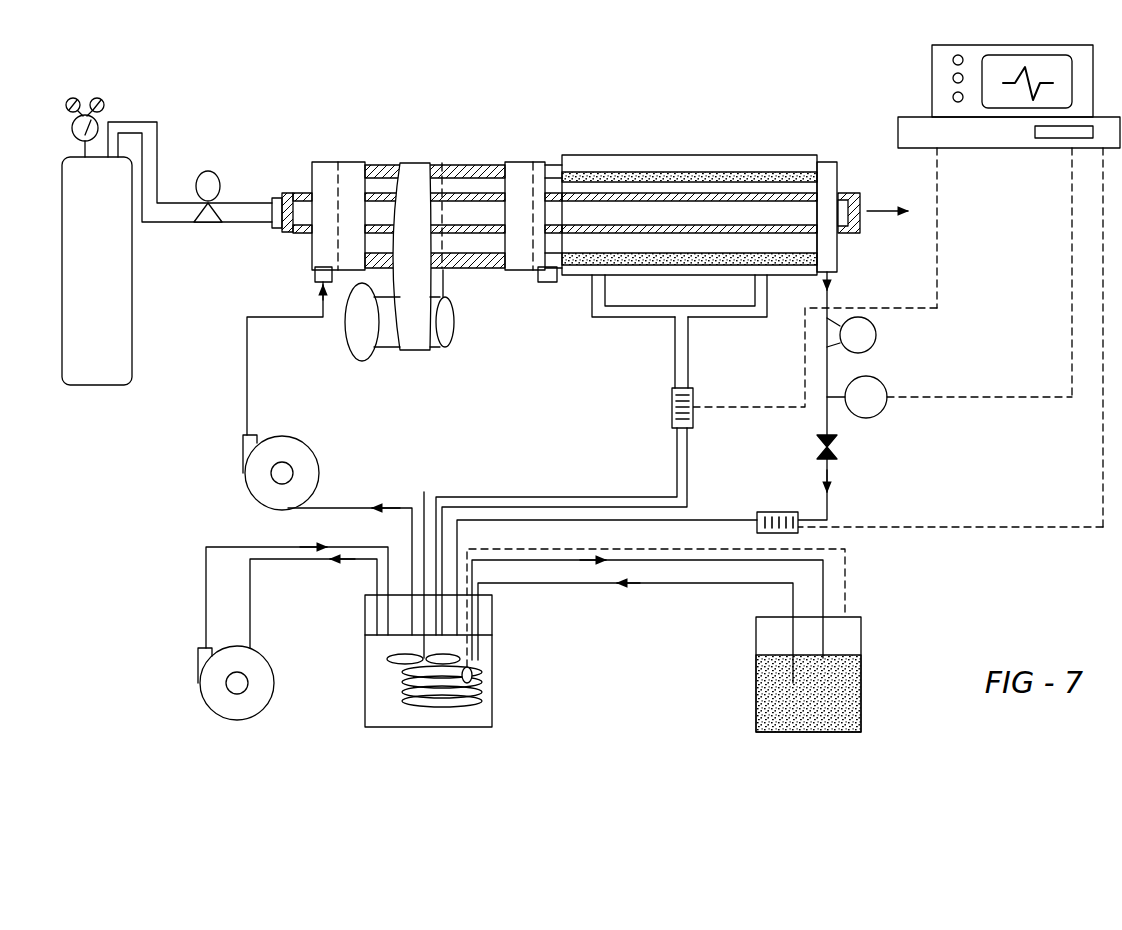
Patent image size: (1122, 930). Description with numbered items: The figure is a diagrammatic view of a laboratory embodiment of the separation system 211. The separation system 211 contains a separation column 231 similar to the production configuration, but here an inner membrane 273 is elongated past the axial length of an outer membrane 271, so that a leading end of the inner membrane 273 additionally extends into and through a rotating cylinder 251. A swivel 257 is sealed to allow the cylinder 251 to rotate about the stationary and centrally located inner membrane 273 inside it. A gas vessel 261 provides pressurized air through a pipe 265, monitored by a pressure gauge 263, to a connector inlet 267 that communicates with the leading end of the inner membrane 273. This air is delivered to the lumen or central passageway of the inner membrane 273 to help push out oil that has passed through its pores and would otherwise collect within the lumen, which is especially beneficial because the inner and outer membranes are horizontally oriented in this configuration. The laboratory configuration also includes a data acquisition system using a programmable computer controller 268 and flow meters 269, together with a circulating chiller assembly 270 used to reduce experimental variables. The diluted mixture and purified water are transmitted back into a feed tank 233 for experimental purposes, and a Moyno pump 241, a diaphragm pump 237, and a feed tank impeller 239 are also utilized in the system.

The separation system 211 is at (746, 57).
The separation column 231 is at (333, 136).
The feed tank 233 is at (493, 660).
The diaphragm pump 237 is at (211, 719).
The feed tank impeller 239 is at (400, 665).
The Moyno pump 241 is at (251, 497).
The rotating cylinder 251 is at (382, 167).
The swivel 257 is at (350, 168).
The gas vessel 261 is at (85, 290).
The pressure gauge 263 is at (208, 171).
The pipe 265 is at (243, 222).
The connector inlet 267 is at (285, 193).
The programmable computer controller 268 is at (932, 80).
The flow meters 269 is at (672, 407).
The circulating chiller assembly 270 is at (862, 635).
The outer membrane 271 is at (637, 172).
The inner membrane 273 is at (477, 192).